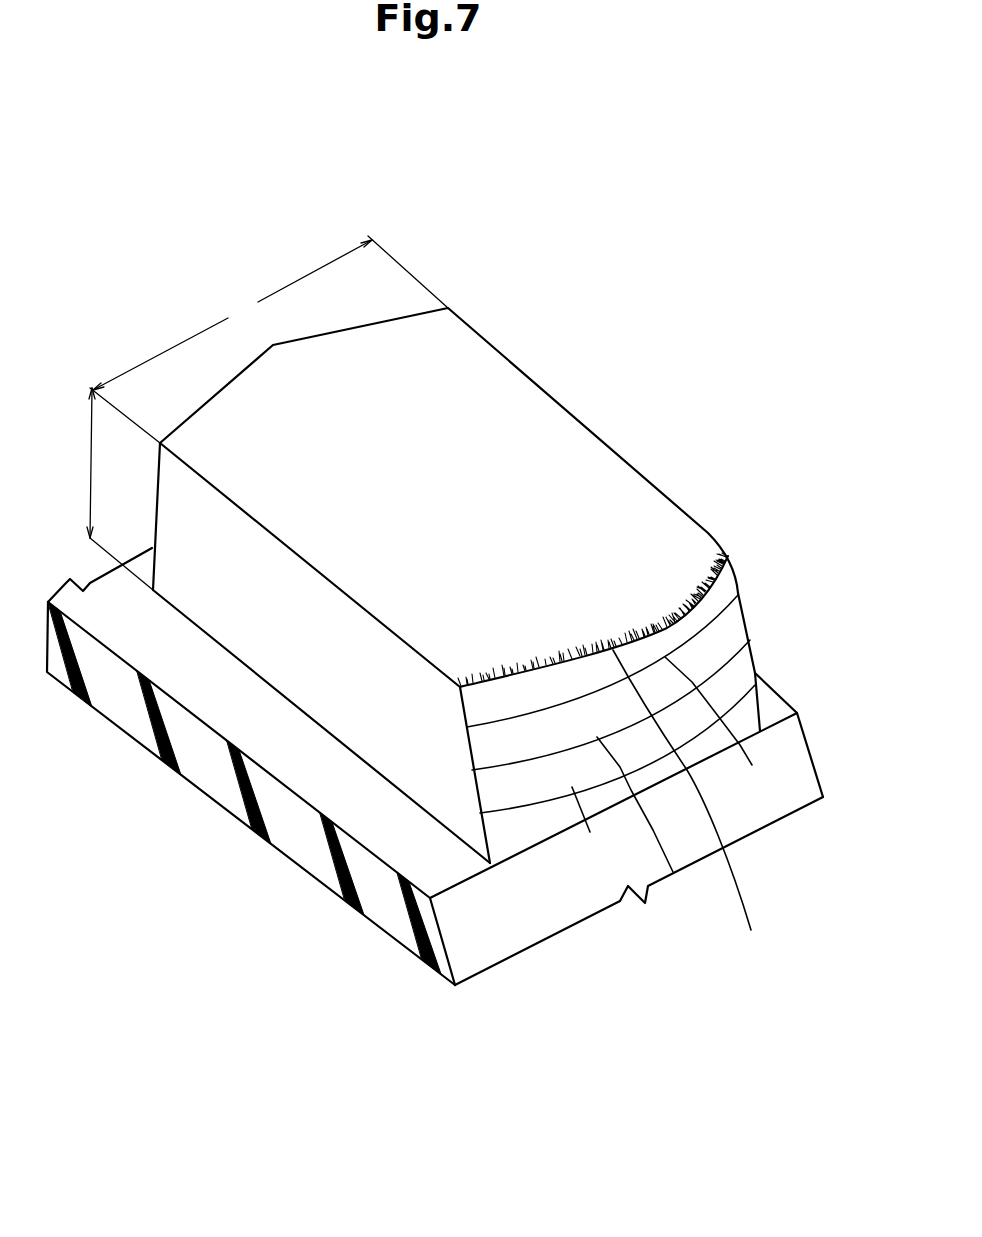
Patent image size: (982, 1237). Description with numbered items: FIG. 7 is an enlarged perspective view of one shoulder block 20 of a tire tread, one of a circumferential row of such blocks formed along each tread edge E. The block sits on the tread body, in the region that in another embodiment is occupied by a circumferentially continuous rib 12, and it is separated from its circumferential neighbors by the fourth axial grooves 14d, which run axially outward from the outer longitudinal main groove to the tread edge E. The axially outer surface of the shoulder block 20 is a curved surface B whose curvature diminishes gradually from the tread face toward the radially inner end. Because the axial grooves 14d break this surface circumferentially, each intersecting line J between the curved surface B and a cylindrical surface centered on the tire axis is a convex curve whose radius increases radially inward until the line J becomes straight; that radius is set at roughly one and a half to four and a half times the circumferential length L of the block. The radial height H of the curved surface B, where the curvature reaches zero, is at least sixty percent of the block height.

The shoulder block 20 is at (477, 682).
The circumferentially continuous rib 12 is at (435, 802).
The fourth axial groove 14d is at (228, 722).
The curved surface B is at (725, 635).
The tread edge E is at (687, 807).
The intersecting line J is at (520, 852).
The circumferential length of the shoulder block L is at (269, 339).
The radial height of the curved surface H is at (106, 489).